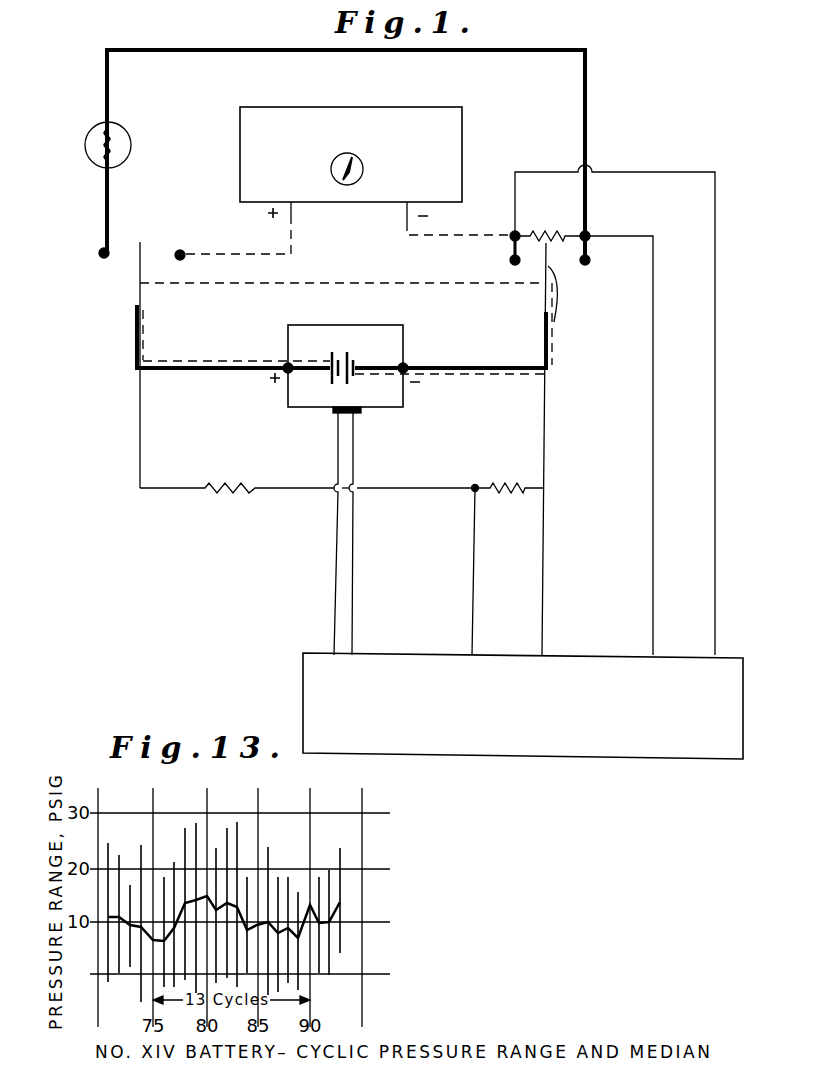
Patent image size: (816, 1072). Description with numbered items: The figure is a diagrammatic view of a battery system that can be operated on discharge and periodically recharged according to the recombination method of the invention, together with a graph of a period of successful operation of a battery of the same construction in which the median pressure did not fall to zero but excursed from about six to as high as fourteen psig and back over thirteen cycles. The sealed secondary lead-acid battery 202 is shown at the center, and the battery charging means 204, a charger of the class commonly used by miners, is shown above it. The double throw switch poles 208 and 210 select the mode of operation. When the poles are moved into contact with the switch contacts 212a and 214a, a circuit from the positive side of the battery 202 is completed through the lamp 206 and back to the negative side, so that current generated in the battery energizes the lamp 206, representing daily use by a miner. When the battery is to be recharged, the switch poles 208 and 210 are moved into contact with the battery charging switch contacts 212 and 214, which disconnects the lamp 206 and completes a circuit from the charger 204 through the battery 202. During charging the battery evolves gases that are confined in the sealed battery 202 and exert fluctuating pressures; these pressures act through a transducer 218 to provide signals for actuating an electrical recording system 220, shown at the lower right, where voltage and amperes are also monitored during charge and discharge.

The battery 202 is at (388, 346).
The battery charging means 204 is at (452, 143).
The lamp 206 is at (118, 143).
The double throw switch pole 208 is at (140, 265).
The double throw switch pole 210 is at (570, 449).
The battery charging switch contact 212 is at (183, 254).
The switch contact 212a is at (100, 255).
The battery charging switch contact 214 is at (592, 258).
The switch contact 214a is at (512, 259).
The transducer 218 is at (360, 412).
The electrical recording system 220 is at (565, 748).